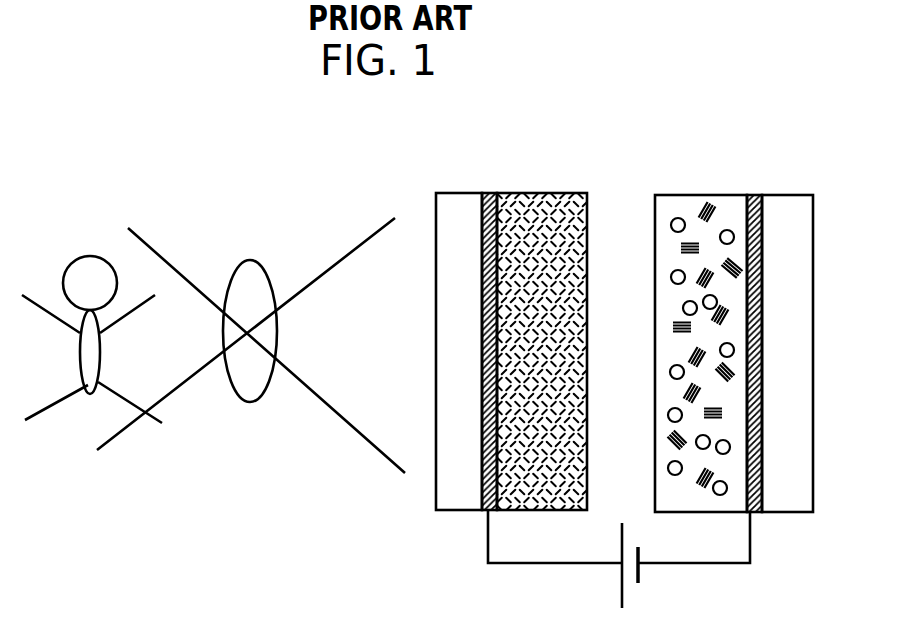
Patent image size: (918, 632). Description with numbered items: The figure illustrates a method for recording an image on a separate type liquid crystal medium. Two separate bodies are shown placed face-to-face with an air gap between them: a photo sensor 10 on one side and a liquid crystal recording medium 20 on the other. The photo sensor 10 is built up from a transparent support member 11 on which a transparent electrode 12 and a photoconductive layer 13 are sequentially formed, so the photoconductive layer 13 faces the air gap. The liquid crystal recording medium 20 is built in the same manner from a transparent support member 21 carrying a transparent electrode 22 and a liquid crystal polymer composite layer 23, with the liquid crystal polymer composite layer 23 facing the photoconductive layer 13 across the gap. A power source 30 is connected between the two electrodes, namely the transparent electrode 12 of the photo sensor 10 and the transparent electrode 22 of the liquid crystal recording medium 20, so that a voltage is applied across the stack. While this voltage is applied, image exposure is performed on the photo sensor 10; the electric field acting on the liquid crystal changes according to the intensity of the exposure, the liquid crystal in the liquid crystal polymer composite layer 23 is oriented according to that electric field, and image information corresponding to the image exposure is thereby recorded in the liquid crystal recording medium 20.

The photo sensor 10 is at (521, 310).
The transparent support member 11 is at (450, 193).
The transparent electrode 12 is at (492, 193).
The photoconductive layer 13 is at (555, 195).
The liquid crystal recording medium 20 is at (762, 307).
The transparent support member 21 is at (797, 200).
The transparent electrode 22 is at (753, 198).
The liquid crystal polymer composite layer 23 is at (678, 198).
The power source 30 is at (619, 564).